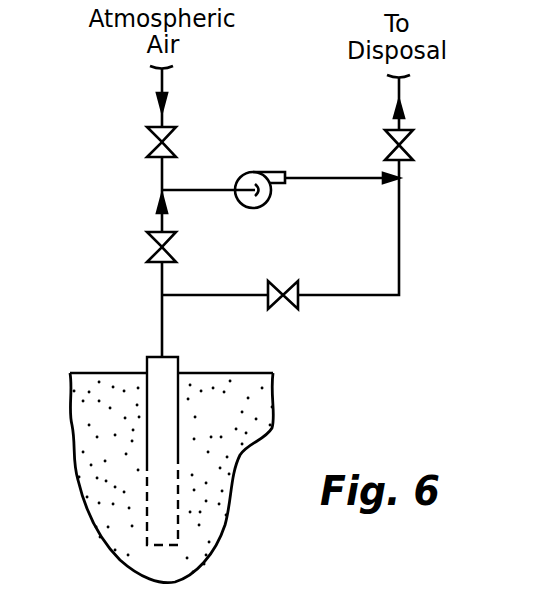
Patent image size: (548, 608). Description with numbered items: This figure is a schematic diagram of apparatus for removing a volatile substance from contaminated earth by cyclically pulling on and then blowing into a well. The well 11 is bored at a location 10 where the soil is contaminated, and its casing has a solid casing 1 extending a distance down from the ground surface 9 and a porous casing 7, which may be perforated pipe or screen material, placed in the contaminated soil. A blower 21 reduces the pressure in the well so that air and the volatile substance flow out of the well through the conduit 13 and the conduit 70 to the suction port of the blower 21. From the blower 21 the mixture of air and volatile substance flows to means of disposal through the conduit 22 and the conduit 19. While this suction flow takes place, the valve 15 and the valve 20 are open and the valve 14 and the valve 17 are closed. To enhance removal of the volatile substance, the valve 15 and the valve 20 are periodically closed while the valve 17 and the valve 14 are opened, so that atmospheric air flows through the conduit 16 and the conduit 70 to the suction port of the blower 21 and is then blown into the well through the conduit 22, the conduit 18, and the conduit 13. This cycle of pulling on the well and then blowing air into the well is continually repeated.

The solid casing 1 is at (147, 435).
The porous casing 7 is at (182, 503).
The ground surface 9 is at (227, 367).
The location 10 is at (235, 419).
The well 11 is at (143, 352).
The conduit 13 is at (170, 333).
The valve 14 is at (287, 280).
The valve 15 is at (175, 252).
The conduit 16 is at (157, 175).
The valve 17 is at (173, 144).
The conduit 18 is at (403, 252).
The conduit 19 is at (403, 98).
The valve 20 is at (413, 147).
The blower 21 is at (243, 166).
The conduit 22 is at (305, 173).
The conduit 70 is at (176, 184).